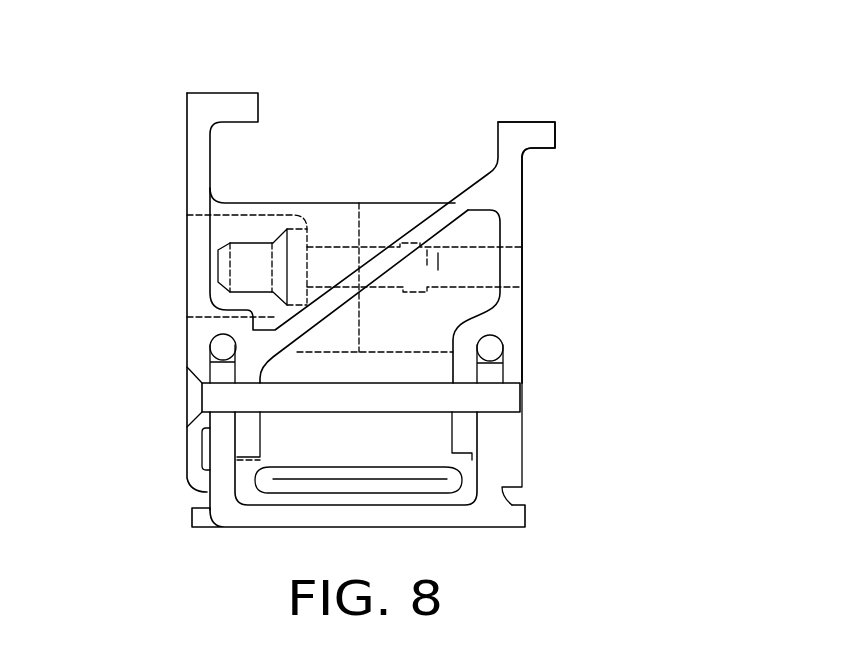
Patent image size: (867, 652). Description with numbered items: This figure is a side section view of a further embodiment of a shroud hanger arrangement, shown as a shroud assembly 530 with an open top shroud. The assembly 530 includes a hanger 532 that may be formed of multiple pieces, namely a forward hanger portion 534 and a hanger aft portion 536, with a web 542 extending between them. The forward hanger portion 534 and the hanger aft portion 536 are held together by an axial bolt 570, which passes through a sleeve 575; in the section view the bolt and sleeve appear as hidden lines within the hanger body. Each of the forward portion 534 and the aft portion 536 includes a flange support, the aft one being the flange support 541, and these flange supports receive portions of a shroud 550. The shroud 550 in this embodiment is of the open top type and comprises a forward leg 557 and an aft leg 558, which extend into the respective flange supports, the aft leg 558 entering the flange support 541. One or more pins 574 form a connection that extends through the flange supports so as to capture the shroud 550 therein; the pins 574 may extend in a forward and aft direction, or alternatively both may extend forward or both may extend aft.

The shroud assembly 530 is at (610, 85).
The hanger 532 is at (338, 130).
The forward hanger portion 534 is at (178, 214).
The hanger aft portion 536 is at (545, 212).
The flange support 541 is at (532, 328).
The web 542 is at (384, 243).
The shroud 550 is at (290, 538).
The forward leg 557 is at (217, 481).
The aft leg 558 is at (488, 475).
The axial bolt 570 is at (180, 293).
The pins 574 is at (198, 397).
The sleeve 575 is at (393, 240).